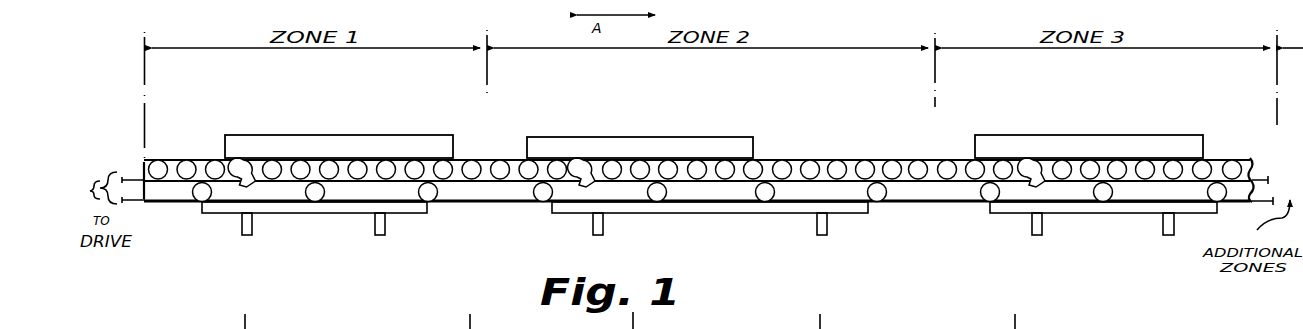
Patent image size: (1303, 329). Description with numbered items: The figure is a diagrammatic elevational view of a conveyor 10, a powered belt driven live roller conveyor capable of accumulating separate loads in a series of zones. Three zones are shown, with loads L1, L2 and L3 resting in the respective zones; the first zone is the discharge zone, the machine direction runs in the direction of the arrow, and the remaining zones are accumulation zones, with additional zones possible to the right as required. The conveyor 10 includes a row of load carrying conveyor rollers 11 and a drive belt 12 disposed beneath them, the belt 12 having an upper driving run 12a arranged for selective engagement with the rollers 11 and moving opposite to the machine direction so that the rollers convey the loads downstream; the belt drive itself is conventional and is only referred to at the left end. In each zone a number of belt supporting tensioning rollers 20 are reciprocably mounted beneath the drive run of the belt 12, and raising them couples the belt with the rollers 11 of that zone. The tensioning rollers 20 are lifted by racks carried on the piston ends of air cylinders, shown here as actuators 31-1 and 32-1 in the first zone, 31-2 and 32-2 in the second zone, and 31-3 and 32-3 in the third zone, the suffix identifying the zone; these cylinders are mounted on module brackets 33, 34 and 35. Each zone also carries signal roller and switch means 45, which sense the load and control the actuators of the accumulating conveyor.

The conveyor 10 is at (852, 82).
The conveyor rollers 11 is at (445, 172).
The drive belt 12 is at (138, 164).
The upper driving run 12a is at (1262, 177).
The belt supporting tensioning rollers 20 is at (317, 195).
The cylinder 31-1 is at (245, 230).
The cylinder 31-2 is at (595, 228).
The cylinder 31-3 is at (1030, 235).
The cylinder 32-1 is at (383, 231).
The cylinder 32-2 is at (822, 232).
The cylinder 32-3 is at (1168, 237).
The module bracket 33 is at (202, 213).
The module bracket 34 is at (553, 213).
The module bracket 35 is at (993, 215).
The signal roller and switch means 45 is at (257, 150).
The load L1 is at (348, 146).
The load L2 is at (663, 146).
The load L3 is at (1105, 146).